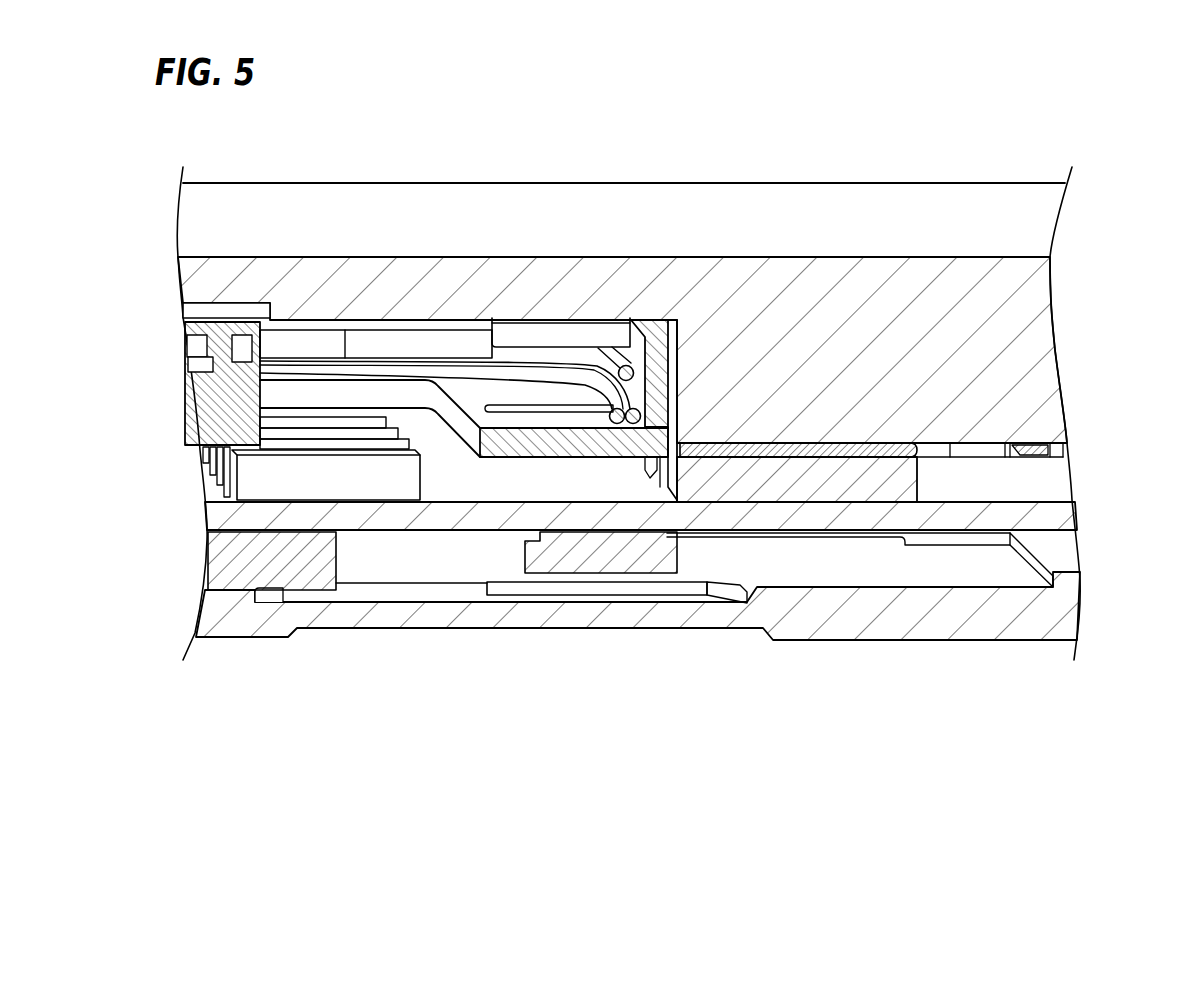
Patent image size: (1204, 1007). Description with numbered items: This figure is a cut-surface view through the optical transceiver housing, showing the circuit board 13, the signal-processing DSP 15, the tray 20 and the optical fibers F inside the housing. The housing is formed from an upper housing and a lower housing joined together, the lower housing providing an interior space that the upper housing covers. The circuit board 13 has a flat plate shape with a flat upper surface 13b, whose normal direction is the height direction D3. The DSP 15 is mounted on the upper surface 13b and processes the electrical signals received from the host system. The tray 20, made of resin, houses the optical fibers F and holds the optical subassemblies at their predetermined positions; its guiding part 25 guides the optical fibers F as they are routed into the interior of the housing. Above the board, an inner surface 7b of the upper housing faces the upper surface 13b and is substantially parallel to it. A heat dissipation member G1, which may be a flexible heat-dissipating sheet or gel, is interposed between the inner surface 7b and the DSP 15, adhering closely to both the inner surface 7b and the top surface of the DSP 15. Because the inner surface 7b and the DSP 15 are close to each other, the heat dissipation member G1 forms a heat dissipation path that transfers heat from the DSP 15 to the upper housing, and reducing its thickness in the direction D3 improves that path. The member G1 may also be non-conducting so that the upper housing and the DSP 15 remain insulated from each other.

The inner surface 7b is at (930, 446).
The circuit board 13 is at (893, 522).
The upper surface 13b is at (602, 488).
The DSP 15 is at (788, 483).
The tray 20 is at (658, 332).
The guiding part 25 is at (457, 383).
The optical fiber F is at (543, 378).
The heat dissipation member G1 is at (837, 446).
The height direction D3 is at (1148, 312).